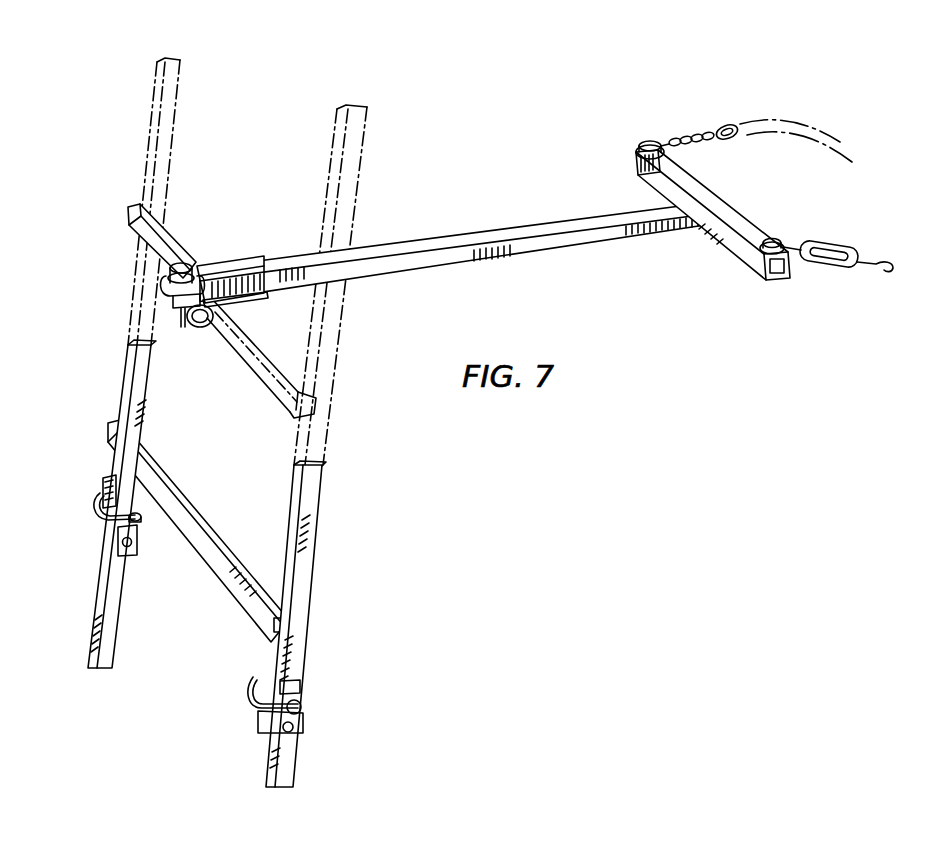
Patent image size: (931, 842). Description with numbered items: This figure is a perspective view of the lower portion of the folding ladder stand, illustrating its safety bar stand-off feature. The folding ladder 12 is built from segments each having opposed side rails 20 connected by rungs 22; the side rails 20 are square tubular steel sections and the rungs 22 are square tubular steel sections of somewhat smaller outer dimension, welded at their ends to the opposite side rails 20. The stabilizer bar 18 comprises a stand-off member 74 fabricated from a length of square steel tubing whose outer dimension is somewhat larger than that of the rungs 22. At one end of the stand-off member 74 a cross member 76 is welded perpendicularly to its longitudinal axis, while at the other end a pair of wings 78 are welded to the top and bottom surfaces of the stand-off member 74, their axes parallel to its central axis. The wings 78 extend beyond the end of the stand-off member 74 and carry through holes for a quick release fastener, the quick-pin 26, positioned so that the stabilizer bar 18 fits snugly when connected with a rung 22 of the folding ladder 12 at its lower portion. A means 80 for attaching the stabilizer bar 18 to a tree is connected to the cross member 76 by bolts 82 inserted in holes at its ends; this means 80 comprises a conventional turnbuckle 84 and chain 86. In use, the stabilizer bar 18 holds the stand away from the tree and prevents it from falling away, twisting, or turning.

The folding ladder 12 is at (126, 146).
The stabilizer bar 18 is at (479, 177).
The side rails 20 is at (125, 384).
The rungs 22 is at (233, 352).
The quick-pin 26 is at (187, 266).
The stand-off member 74 is at (528, 257).
The cross member 76 is at (728, 216).
The wings 78 is at (234, 268).
The means for attaching stabilizer bar to a tree 80 is at (714, 113).
The bolts 82 is at (640, 152).
The turnbuckle 84 is at (832, 247).
The chain 86 is at (806, 118).